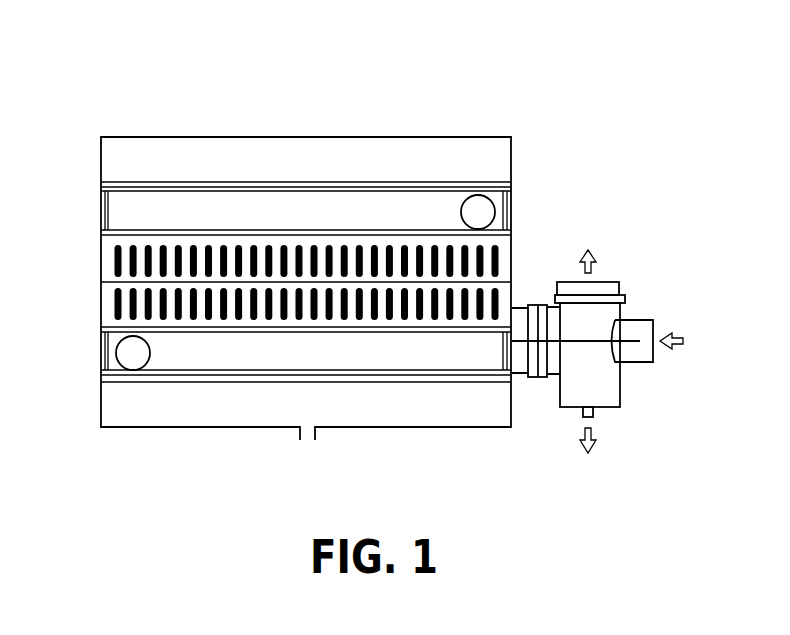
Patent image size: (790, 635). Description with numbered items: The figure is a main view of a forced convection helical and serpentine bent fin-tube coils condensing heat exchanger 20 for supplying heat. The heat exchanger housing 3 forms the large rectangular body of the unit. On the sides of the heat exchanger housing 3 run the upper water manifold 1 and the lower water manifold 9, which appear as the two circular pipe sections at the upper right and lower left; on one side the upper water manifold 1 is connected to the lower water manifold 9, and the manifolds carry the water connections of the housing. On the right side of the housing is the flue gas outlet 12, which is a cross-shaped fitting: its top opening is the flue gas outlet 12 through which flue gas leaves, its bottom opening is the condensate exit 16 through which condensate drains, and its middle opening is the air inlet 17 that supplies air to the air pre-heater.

The heat exchanger 20 is at (410, 48).
The heat exchanger housing 3 is at (358, 157).
The upper water manifold 1 is at (482, 210).
The lower water manifold 9 is at (125, 352).
The flue gas outlet 12 is at (600, 285).
The air inlet 17 is at (643, 340).
The condensate exit 16 is at (585, 418).